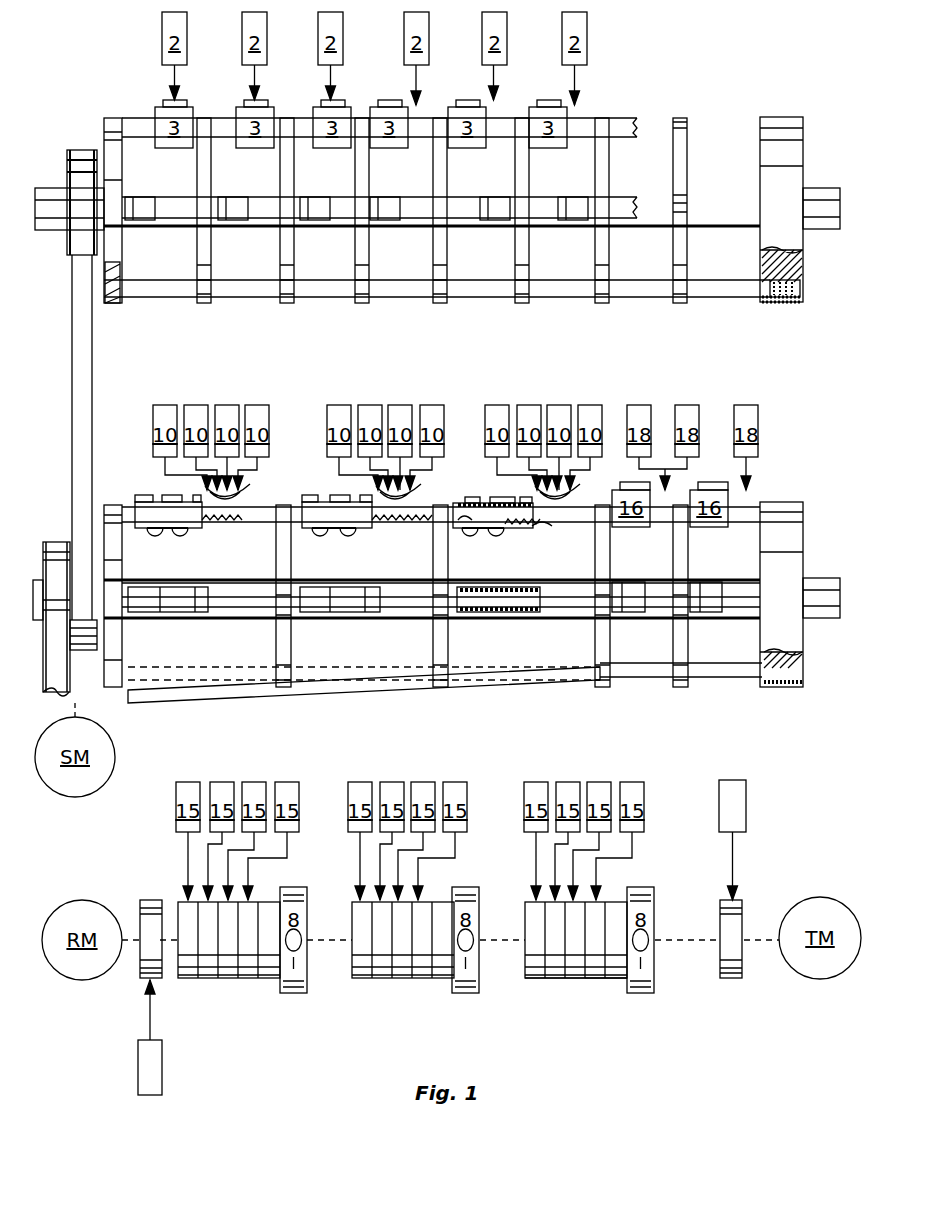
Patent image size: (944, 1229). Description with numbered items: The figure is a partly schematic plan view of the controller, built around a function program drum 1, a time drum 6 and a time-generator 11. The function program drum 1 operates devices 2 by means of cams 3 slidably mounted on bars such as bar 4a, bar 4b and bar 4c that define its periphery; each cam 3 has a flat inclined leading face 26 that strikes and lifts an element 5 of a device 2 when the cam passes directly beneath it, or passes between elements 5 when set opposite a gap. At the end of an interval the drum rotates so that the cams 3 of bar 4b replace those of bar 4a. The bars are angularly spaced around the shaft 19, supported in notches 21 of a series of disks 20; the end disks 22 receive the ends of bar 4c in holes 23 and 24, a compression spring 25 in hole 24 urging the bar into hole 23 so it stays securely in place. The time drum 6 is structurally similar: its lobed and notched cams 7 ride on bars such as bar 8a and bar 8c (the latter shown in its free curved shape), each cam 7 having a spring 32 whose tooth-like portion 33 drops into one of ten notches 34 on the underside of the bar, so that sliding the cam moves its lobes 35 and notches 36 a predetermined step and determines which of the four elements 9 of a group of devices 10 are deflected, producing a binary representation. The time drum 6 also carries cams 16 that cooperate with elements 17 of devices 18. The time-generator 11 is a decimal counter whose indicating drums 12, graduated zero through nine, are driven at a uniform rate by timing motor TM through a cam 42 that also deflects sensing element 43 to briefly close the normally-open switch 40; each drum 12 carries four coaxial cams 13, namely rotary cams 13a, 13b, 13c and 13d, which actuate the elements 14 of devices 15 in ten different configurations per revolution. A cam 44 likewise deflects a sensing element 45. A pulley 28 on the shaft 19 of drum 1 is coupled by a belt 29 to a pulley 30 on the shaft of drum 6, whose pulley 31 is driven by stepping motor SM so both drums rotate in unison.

The function program drum 1 is at (117, 84).
The devices 2 is at (374, 38).
The cams 3 is at (138, 228).
The bar 4a is at (137, 137).
The bar 4b is at (176, 197).
The bar 4c is at (163, 297).
The elements 5 is at (249, 88).
The time drum 6 is at (134, 454).
The cams 7 is at (189, 612).
The bar 8a is at (230, 524).
The bar 8c is at (256, 696).
The elements 9 is at (242, 488).
The devices 10 is at (377, 431).
The time-generator 11 is at (118, 878).
The indicating drums 12 is at (304, 889).
The cams 13 is at (254, 990).
The rotary cam 13a is at (536, 978).
The rotary cam 13b is at (556, 978).
The rotary cam 13c is at (575, 978).
The rotary cam 13d is at (612, 978).
The actuating elements 14 is at (190, 878).
The devices 15 is at (409, 807).
The cams 16 is at (628, 590).
The elements 17 is at (648, 478).
The devices 18 is at (692, 431).
The shaft 19 is at (54, 188).
The disks 20 is at (204, 303).
The notches 21 is at (686, 133).
The end disks 22 is at (122, 254).
The hole 23 is at (128, 302).
The hole 24 is at (770, 303).
The compression spring 25 is at (800, 288).
The leading face 26 is at (160, 222).
The pulley 28 is at (66, 258).
The belt 29 is at (70, 326).
The pulley 30 is at (95, 663).
The pulley 31 is at (50, 542).
The spring 32 is at (172, 536).
The tooth-like portion 33 is at (496, 536).
The notches 34 is at (458, 524).
The lobes 35 is at (144, 495).
The notches 36 is at (178, 486).
The switch 40 is at (732, 806).
The cam 42 is at (740, 980).
The sensing element 43 is at (738, 890).
The cam 44 is at (140, 978).
The sensing element 45 is at (146, 998).